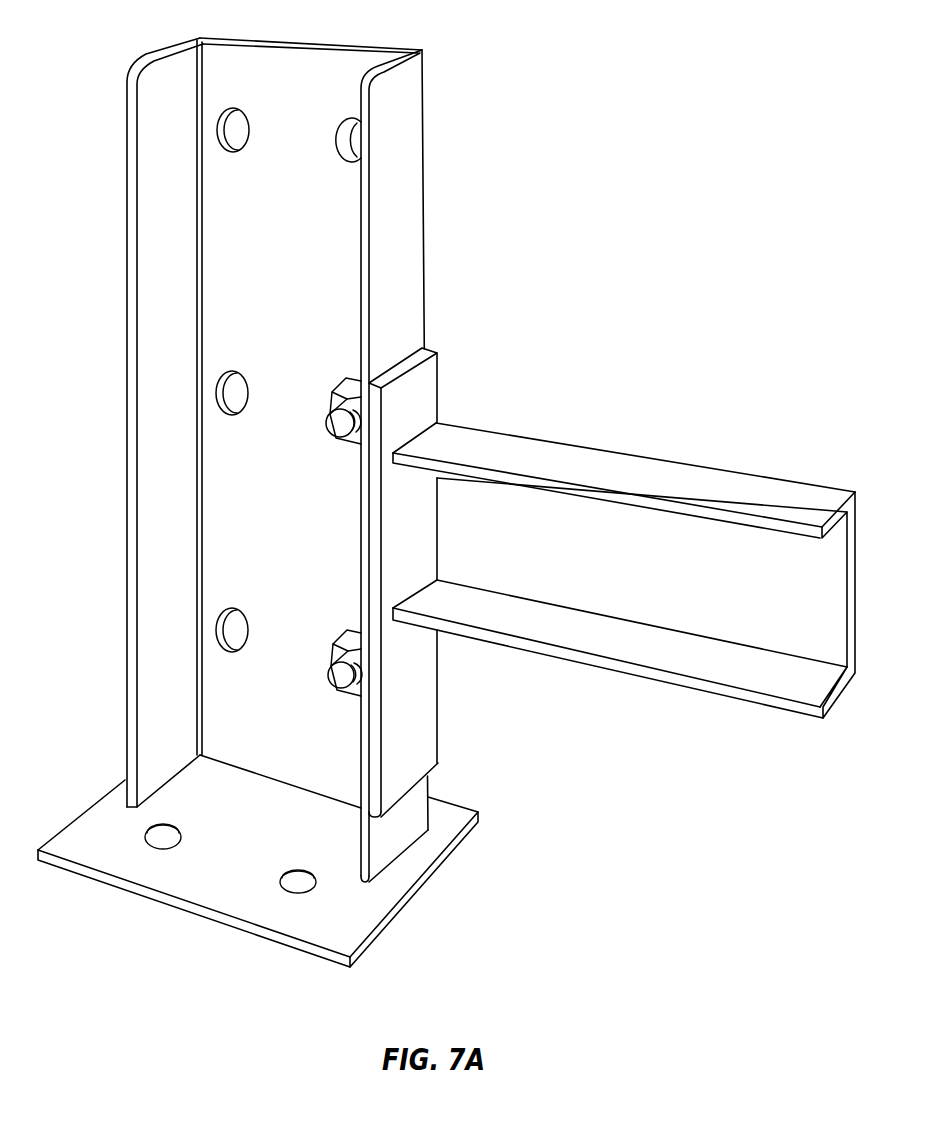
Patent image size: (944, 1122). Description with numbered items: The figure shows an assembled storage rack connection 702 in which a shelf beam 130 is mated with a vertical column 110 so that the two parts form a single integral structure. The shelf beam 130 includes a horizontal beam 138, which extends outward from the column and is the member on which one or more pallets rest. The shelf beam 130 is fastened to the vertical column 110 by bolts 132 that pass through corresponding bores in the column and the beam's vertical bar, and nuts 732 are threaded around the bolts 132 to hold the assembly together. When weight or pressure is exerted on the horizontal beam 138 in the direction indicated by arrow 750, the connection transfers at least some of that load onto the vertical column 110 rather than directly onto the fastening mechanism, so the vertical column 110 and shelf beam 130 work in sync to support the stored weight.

The storage rack assembly 702 is at (624, 192).
The vertical column 110 is at (335, 903).
The arrow 750 is at (459, 524).
The bolts 132 is at (352, 430).
The nuts 732 is at (352, 385).
The shelf beam 130 is at (624, 585).
The horizontal beam 138 is at (674, 467).